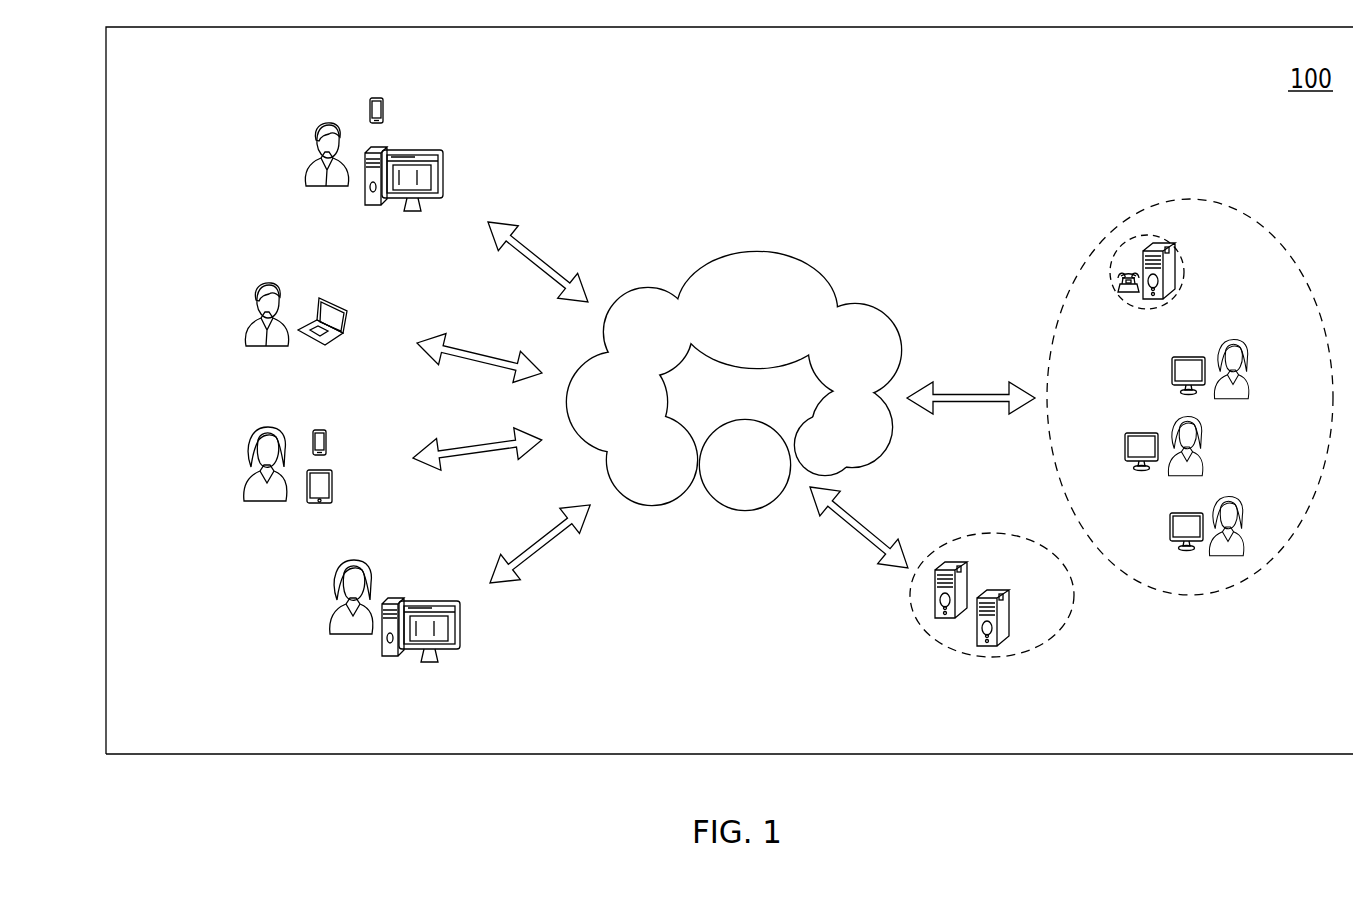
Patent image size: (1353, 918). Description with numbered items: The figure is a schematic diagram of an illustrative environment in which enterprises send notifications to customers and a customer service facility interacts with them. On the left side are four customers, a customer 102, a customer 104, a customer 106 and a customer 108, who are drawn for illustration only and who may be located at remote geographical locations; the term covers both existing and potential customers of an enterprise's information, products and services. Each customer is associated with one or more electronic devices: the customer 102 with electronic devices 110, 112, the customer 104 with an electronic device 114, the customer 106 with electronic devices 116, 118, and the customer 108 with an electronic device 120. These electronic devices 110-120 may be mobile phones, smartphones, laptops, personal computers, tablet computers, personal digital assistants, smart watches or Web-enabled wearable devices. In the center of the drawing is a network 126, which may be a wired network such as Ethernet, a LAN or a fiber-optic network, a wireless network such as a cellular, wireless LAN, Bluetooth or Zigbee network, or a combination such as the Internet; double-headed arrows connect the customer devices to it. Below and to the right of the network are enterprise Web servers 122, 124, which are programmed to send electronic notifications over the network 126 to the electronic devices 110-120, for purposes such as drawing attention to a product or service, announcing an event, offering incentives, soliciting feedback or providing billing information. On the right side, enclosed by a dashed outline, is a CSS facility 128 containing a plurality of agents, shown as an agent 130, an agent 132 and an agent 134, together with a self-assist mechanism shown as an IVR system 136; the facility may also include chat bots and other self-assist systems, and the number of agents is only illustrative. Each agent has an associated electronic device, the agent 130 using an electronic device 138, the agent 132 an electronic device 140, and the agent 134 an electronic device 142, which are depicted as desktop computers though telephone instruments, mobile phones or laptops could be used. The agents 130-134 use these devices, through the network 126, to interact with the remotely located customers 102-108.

The customer 102 is at (308, 160).
The customer 104 is at (246, 320).
The customer 106 is at (244, 480).
The customer 108 is at (330, 615).
The electronic device 110 is at (384, 100).
The electronic device 112 is at (443, 175).
The electronic device 114 is at (347, 311).
The electronic device 116 is at (327, 437).
The electronic device 118 is at (333, 490).
The electronic device 120 is at (462, 628).
The Web server 122 is at (962, 562).
The Web server 124 is at (1005, 591).
The network 126 is at (827, 400).
The CSS facility 128 is at (1080, 246).
The agent 130 is at (1245, 342).
The agent 132 is at (1200, 422).
The agent 134 is at (1240, 503).
The IVR system 136 is at (1164, 242).
The electronic device 138 is at (1172, 372).
The electronic device 140 is at (1125, 448).
The electronic device 142 is at (1170, 532).